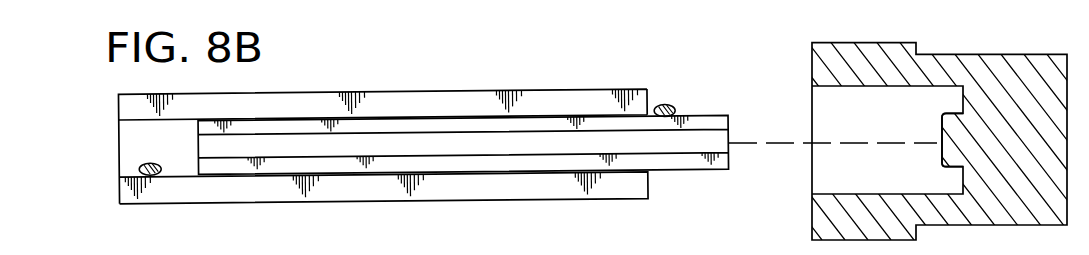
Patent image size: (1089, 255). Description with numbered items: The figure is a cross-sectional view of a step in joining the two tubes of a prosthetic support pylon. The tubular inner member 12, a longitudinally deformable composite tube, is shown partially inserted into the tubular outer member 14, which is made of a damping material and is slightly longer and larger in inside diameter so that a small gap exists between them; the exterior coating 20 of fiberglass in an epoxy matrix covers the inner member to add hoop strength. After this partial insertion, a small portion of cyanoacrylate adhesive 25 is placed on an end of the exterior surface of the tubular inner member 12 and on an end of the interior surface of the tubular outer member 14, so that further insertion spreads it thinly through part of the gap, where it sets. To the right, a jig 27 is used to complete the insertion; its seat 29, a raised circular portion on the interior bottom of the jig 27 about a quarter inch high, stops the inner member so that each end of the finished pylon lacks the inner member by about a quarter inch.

The tubular inner member 12 is at (698, 120).
The tubular outer member 14 is at (593, 92).
The exterior coating 20 is at (678, 171).
The adhesive 25 is at (139, 171).
The jig 27 is at (943, 60).
The seat 29 is at (938, 136).